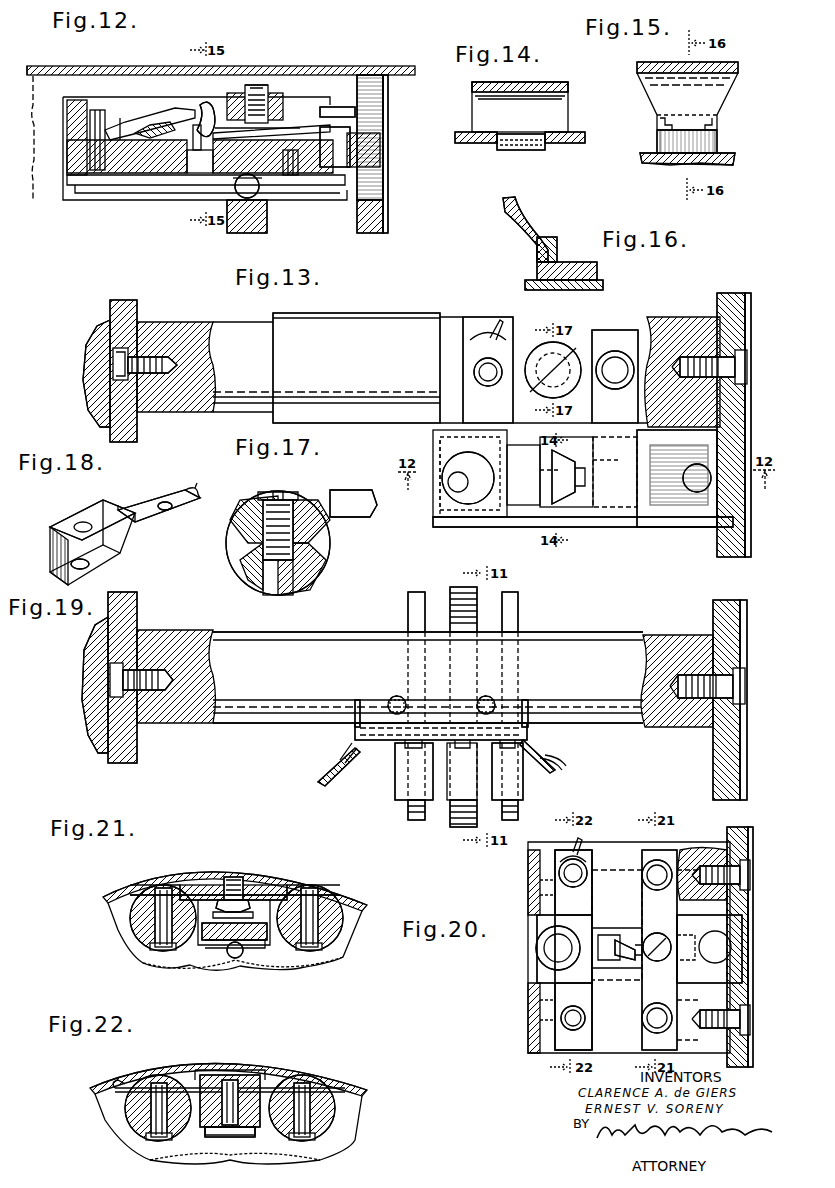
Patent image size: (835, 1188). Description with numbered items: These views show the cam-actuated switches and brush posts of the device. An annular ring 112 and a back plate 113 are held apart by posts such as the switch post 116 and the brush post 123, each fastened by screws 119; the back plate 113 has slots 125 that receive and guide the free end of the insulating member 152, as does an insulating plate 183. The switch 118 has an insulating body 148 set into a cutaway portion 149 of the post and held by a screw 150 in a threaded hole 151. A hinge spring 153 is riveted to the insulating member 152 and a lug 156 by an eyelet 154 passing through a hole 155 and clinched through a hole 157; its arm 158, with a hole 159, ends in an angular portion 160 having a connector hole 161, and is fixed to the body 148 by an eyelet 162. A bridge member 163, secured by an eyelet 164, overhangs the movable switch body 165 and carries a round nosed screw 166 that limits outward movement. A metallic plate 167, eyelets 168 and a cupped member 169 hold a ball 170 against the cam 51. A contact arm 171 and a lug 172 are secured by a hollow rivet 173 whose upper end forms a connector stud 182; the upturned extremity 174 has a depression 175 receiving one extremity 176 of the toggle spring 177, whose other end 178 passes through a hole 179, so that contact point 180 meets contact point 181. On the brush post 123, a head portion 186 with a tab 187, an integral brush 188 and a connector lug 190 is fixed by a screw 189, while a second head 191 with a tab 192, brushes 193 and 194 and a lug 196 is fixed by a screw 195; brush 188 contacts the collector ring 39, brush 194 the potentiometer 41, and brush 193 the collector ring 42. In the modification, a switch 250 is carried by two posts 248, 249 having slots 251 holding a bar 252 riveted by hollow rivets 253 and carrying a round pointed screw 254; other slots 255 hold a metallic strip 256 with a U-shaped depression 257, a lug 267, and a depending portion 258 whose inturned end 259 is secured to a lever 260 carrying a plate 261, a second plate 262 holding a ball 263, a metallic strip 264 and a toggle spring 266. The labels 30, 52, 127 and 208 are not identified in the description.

In FIG. 12, the switch unit 30 is at (40, 58).
In FIG. 19, the collector ring 39 is at (416, 600).
In FIG. 19, the potentiometer 41 is at (450, 600).
In FIG. 19, the collector ring 42 is at (528, 610).
In FIG. 12, the cam 51 is at (230, 225).
In FIG. 21, the cam 51 is at (175, 968).
In FIG. 22, the mounting lug 52 is at (180, 1160).
In FIG. 13, the annular ring 112 is at (123, 300).
In FIG. 19, the annular ring 112 is at (125, 625).
In FIG. 12, the back plate 113 is at (383, 200).
In FIG. 13, the back plate 113 is at (735, 293).
In FIG. 19, the back plate 113 is at (735, 589).
In FIG. 21, the back plate 113 is at (348, 905).
In FIG. 20, the back plate 113 is at (740, 845).
In FIG. 13, the switch post 116 is at (314, 320).
In FIG. 17, the switch post 116 is at (240, 580).
In FIG. 12, the switch 118 is at (232, 93).
In FIG. 13, the switch 118 is at (600, 330).
In FIG. 17, the switch 118 is at (350, 522).
In FIG. 13, the screw 119 is at (118, 372).
In FIG. 19, the screw 119 is at (115, 690).
In FIG. 20, the screw 119 is at (740, 868).
In FIG. 19, the brush post 123 is at (352, 616).
In FIG. 12, the slot 125 is at (365, 75).
In FIG. 13, the slot 125 is at (752, 525).
In FIG. 21, the slot 125 is at (190, 885).
In FIG. 13, the bracket 127 is at (90, 340).
In FIG. 19, the bracket 127 is at (88, 655).
In FIG. 13, the insulating body 148 is at (615, 320).
In FIG. 17, the insulating body 148 is at (305, 510).
In FIG. 13, the cutaway portion 149 is at (450, 320).
In FIG. 17, the cutaway portion 149 is at (235, 520).
In FIG. 13, the countersunk screw 150 is at (535, 340).
In FIG. 17, the countersunk screw 150 is at (270, 495).
In FIG. 17, the hole 151 is at (285, 590).
In FIG. 12, the insulating member 152 is at (75, 200).
In FIG. 15, the insulating member 152 is at (738, 158).
In FIG. 16, the insulating member 152 is at (530, 282).
In FIG. 13, the insulating member 152 is at (455, 525).
In FIG. 12, the hinge spring 153 is at (85, 115).
In FIG. 13, the hinge spring 153 is at (470, 440).
In FIG. 18, the hinge spring 153 is at (103, 502).
In FIG. 12, the eyelet 154 is at (100, 130).
In FIG. 13, the eyelet 154 is at (490, 458).
In FIG. 12, the hole 155 is at (100, 165).
In FIG. 18, the hole 155 is at (90, 568).
In FIG. 12, the lug 156 is at (170, 120).
In FIG. 13, the lug 156 is at (480, 470).
In FIG. 12, the hole 157 is at (118, 100).
In FIG. 13, the hole 157 is at (452, 487).
In FIG. 18, the hole 157 is at (80, 522).
In FIG. 13, the arm 158 is at (466, 385).
In FIG. 18, the arm 158 is at (145, 500).
In FIG. 18, the hole 159 is at (168, 512).
In FIG. 13, the angular portion 160 is at (483, 335).
In FIG. 18, the angular portion 160 is at (186, 488).
In FIG. 13, the hole 161 is at (492, 330).
In FIG. 18, the hole 161 is at (195, 495).
In FIG. 13, the eyelet 162 is at (478, 368).
In FIG. 12, the bridge member 163 is at (250, 85).
In FIG. 13, the bridge member 163 is at (640, 350).
In FIG. 17, the bridge member 163 is at (345, 490).
In FIG. 13, the eyelet 164 is at (615, 355).
In FIG. 12, the movable switch body 165 is at (377, 133).
In FIG. 13, the movable switch body 165 is at (736, 455).
In FIG. 12, the round nosed screw 166 is at (257, 85).
In FIG. 13, the round nosed screw 166 is at (620, 490).
In FIG. 12, the metallic plate 167 is at (120, 195).
In FIG. 12, the eyelets 168 is at (190, 200).
In FIG. 12, the cupped member 169 is at (262, 200).
In FIG. 12, the ball 170 is at (240, 200).
In FIG. 12, the contact arm 171 is at (262, 120).
In FIG. 14, the contact arm 171 is at (570, 143).
In FIG. 13, the contact arm 171 is at (670, 490).
In FIG. 12, the lug 172 is at (290, 125).
In FIG. 15, the lug 172 is at (718, 140).
In FIG. 16, the lug 172 is at (575, 262).
In FIG. 13, the lug 172 is at (695, 530).
In FIG. 12, the hollow rivet 173 is at (325, 107).
In FIG. 12, the upturned extremity 174 is at (240, 128).
In FIG. 16, the upturned extremity 174 is at (545, 237).
In FIG. 13, the upturned extremity 174 is at (595, 465).
In FIG. 15, the lateral depression 175 is at (718, 118).
In FIG. 16, the lateral depression 175 is at (560, 237).
In FIG. 14, the extremity 176 is at (520, 150).
In FIG. 15, the extremity 176 is at (680, 125).
In FIG. 16, the extremity 176 is at (528, 220).
In FIG. 12, the toggle spring 177 is at (200, 102).
In FIG. 14, the toggle spring 177 is at (551, 81).
In FIG. 15, the toggle spring 177 is at (746, 56).
In FIG. 16, the toggle spring 177 is at (495, 213).
In FIG. 13, the toggle spring 177 is at (540, 478).
In FIG. 12, the end 178 is at (195, 150).
In FIG. 12, the hole 179 is at (205, 150).
In FIG. 14, the hole 179 is at (488, 145).
In FIG. 13, the hole 179 is at (580, 500).
In FIG. 12, the contact point 180 is at (175, 108).
In FIG. 12, the contact point 181 is at (160, 108).
In FIG. 13, the connector stud 182 is at (702, 492).
In FIG. 12, the insulating plate 183 is at (388, 225).
In FIG. 13, the insulating plate 183 is at (750, 300).
In FIG. 19, the insulating plate 183 is at (745, 625).
In FIG. 20, the insulating plate 183 is at (750, 830).
In FIG. 19, the head portion 186 is at (355, 755).
In FIG. 19, the tab 187 is at (358, 700).
In FIG. 19, the brush 188 is at (395, 778).
In FIG. 19, the screw 189 is at (398, 697).
In FIG. 19, the connector lug 190 is at (325, 775).
In FIG. 19, the head portion 191 is at (534, 736).
In FIG. 19, the tab 192 is at (528, 703).
In FIG. 19, the brush 193 is at (525, 777).
In FIG. 19, the brush 194 is at (440, 805).
In FIG. 19, the screw 195 is at (486, 697).
In FIG. 19, the lug 196 is at (545, 758).
In FIG. 21, the housing shell 208 is at (205, 862).
In FIG. 22, the housing shell 208 is at (160, 1070).
In FIG. 21, the post 248 is at (140, 935).
In FIG. 22, the post 248 is at (130, 1120).
In FIG. 20, the post 248 is at (540, 870).
In FIG. 21, the post 249 is at (335, 918).
In FIG. 22, the post 249 is at (325, 1120).
In FIG. 20, the post 249 is at (535, 1005).
In FIG. 21, the switch 250 is at (270, 888).
In FIG. 20, the switch 250 is at (528, 913).
In FIG. 21, the slots 251 is at (150, 888).
In FIG. 20, the slots 251 is at (680, 850).
In FIG. 21, the bar 252 is at (275, 910).
In FIG. 20, the bar 252 is at (650, 1000).
In FIG. 21, the hollow rivets 253 is at (158, 918).
In FIG. 22, the hollow rivets 253 is at (152, 1138).
In FIG. 20, the hollow rivets 253 is at (590, 865).
In FIG. 21, the round pointed screw 254 is at (235, 877).
In FIG. 20, the round pointed screw 254 is at (660, 935).
In FIG. 22, the slots 255 is at (130, 1098).
In FIG. 20, the slots 255 is at (560, 887).
In FIG. 22, the metallic strip 256 is at (195, 1075).
In FIG. 20, the metallic strip 256 is at (545, 1035).
In FIG. 22, the U-shaped depression 257 is at (225, 1078).
In FIG. 20, the U-shaped depression 257 is at (545, 925).
In FIG. 20, the depending strip portion 258 is at (540, 955).
In FIG. 22, the portion 259 is at (252, 1135).
In FIG. 21, the lever 260 is at (200, 945).
In FIG. 22, the lever 260 is at (205, 1135).
In FIG. 20, the lever 260 is at (728, 932).
In FIG. 21, the metallic plate 261 is at (260, 948).
In FIG. 21, the plate 262 is at (268, 945).
In FIG. 21, the ball 263 is at (235, 958).
In FIG. 21, the metallic strip 264 is at (250, 885).
In FIG. 20, the metallic strip 264 is at (688, 960).
In FIG. 20, the toggle spring 266 is at (625, 960).
In FIG. 20, the lug 267 is at (580, 850).